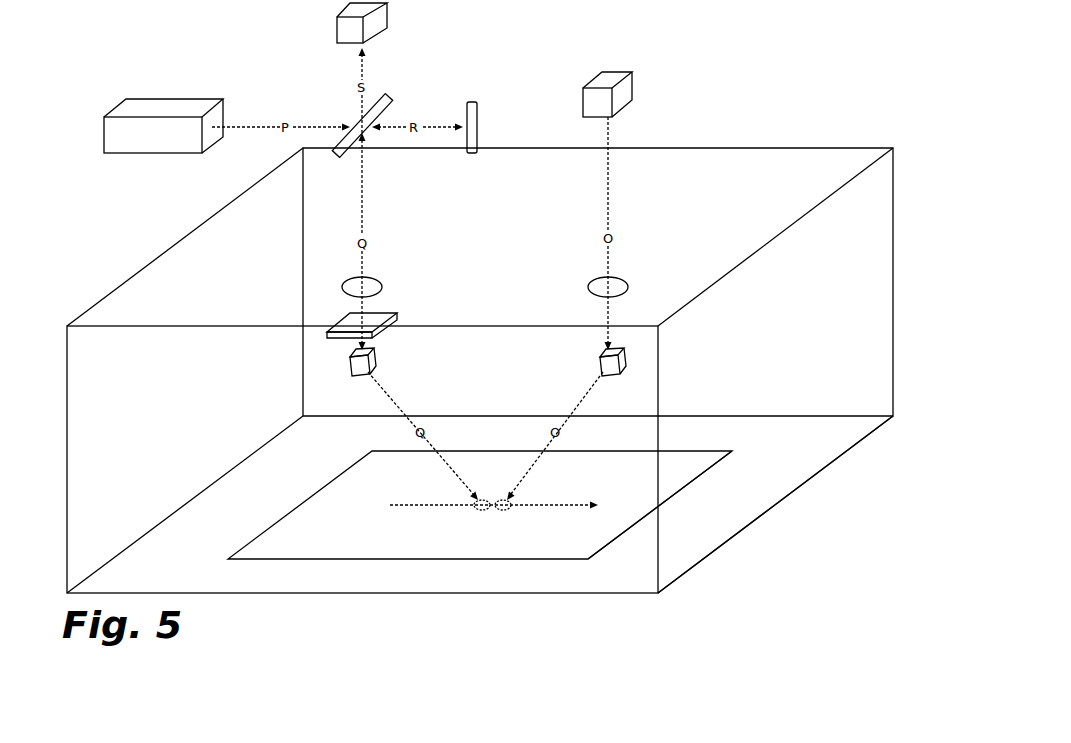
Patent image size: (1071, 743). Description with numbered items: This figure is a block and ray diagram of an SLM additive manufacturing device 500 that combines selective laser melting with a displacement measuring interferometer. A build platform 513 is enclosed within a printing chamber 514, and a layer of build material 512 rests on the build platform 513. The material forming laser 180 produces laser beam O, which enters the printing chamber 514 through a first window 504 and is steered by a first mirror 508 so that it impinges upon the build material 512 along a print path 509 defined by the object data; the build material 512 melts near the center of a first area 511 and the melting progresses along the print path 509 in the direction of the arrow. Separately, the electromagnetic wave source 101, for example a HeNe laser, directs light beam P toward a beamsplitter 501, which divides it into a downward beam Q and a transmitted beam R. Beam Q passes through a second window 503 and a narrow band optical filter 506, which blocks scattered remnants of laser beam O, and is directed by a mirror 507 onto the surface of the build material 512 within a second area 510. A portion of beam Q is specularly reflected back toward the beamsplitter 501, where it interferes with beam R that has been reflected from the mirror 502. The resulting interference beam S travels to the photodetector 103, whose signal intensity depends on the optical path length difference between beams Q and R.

The SLM additive manufacturing device 500 is at (875, 46).
The electromagnetic wave source 101 is at (167, 133).
The photodetector 103 is at (347, 33).
The material forming laser 180 is at (622, 95).
The beamsplitter 501 is at (390, 98).
The mirror 502 is at (477, 105).
The second window 503 is at (375, 275).
The first window 504 is at (594, 275).
The narrow band optical filter 506 is at (387, 312).
The mirror 507 is at (345, 367).
The first mirror 508 is at (626, 367).
The print path 509 is at (417, 507).
The second area 510 is at (478, 510).
The first area 511 is at (502, 510).
The build material 512 is at (600, 523).
The build platform 513 is at (688, 485).
The printing chamber 514 is at (807, 482).